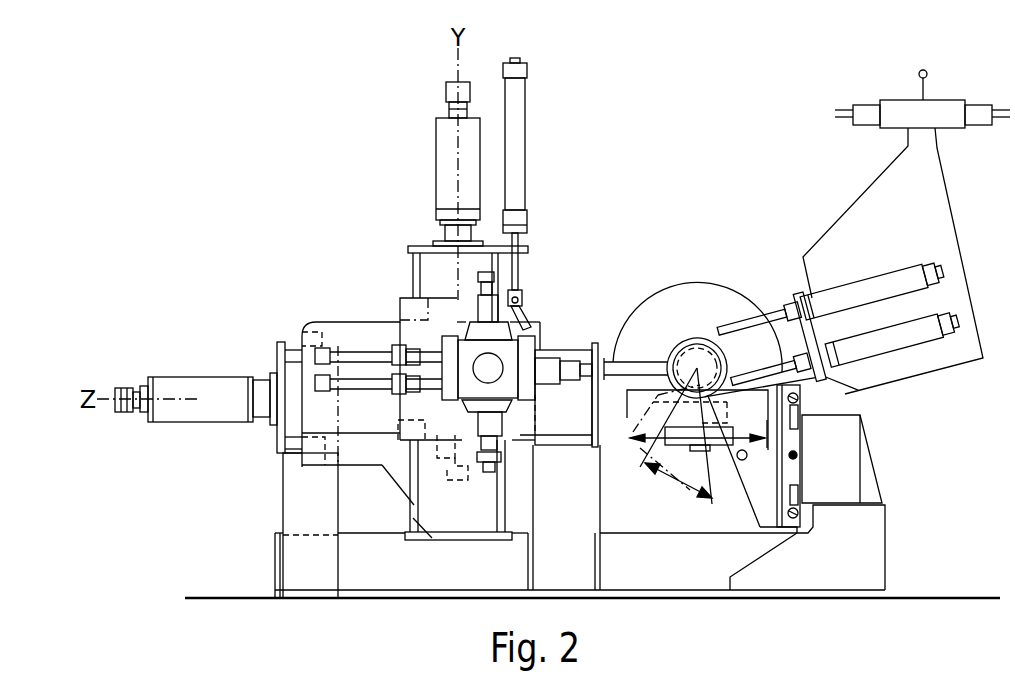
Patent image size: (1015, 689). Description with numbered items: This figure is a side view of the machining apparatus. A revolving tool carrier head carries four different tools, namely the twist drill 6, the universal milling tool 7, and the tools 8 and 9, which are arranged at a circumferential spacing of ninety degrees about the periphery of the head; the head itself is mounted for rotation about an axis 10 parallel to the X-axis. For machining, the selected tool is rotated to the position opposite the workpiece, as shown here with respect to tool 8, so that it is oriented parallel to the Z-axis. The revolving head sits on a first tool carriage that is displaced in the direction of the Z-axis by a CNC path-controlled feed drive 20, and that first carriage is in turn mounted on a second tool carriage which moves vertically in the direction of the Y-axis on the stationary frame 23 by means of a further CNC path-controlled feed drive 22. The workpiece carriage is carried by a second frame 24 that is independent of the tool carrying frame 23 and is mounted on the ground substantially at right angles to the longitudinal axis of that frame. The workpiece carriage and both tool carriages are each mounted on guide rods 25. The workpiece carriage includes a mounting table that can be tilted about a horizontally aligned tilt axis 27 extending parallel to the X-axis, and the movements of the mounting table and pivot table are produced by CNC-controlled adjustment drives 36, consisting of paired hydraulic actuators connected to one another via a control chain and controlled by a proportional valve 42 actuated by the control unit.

The twist drill tool 6 is at (382, 365).
The universal milling tool 7 is at (490, 460).
The tool 8 is at (608, 357).
The tool 9 is at (488, 255).
The axis of rotation of revolving head 10 is at (488, 367).
The CNC path-controlled feed drive 20 is at (212, 407).
The CNC path-controlled feed drive 22 is at (447, 148).
The frame 23 is at (293, 572).
The second frame 24 is at (838, 582).
The guide rods 25 is at (411, 262).
The tilt axis 27 is at (697, 368).
The CNC-controlled adjustment drives 36 is at (853, 352).
The proportional valve 42 is at (900, 107).